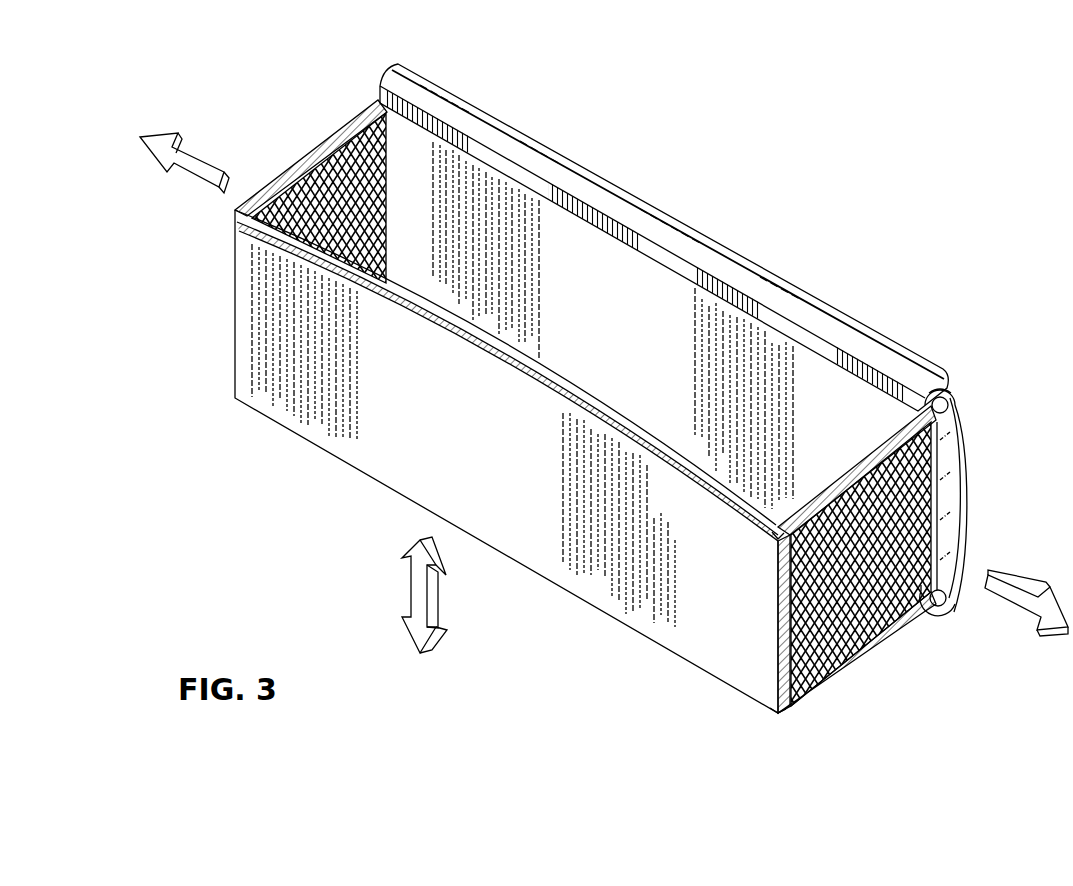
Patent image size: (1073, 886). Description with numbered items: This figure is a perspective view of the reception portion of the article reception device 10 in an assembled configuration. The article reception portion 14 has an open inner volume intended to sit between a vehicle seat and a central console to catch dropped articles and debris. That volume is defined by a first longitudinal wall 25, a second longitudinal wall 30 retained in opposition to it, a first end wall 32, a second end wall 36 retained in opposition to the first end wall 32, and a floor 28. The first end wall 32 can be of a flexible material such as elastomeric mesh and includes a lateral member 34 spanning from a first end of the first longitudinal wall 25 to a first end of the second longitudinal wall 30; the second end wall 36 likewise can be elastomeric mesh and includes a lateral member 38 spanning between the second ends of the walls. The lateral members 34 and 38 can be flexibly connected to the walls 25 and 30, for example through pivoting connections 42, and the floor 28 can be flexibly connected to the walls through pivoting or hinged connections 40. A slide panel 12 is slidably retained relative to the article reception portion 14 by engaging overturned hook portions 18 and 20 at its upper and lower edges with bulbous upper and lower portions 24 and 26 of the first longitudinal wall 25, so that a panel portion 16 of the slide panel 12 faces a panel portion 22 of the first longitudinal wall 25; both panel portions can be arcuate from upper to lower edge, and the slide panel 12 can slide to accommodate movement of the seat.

The article reception device 10 is at (604, 413).
The slide panel 12 is at (918, 505).
The article reception portion 14 is at (370, 541).
The panel portion 16 is at (970, 462).
The hook portion 18 is at (929, 390).
The hook portion 20 is at (921, 613).
The panel portion 22 is at (937, 490).
The upper portion 24 is at (956, 403).
The first longitudinal wall 25 is at (611, 334).
The lower portion 26 is at (960, 612).
The floor 28 is at (857, 660).
The second longitudinal wall 30 is at (481, 441).
The first end wall 32 is at (805, 692).
The lateral member 34 is at (873, 443).
The second end wall 36 is at (312, 170).
The lateral member 38 is at (332, 133).
The pivoting or hinged connection 40 is at (780, 716).
The pivoting connection 42 is at (777, 537).